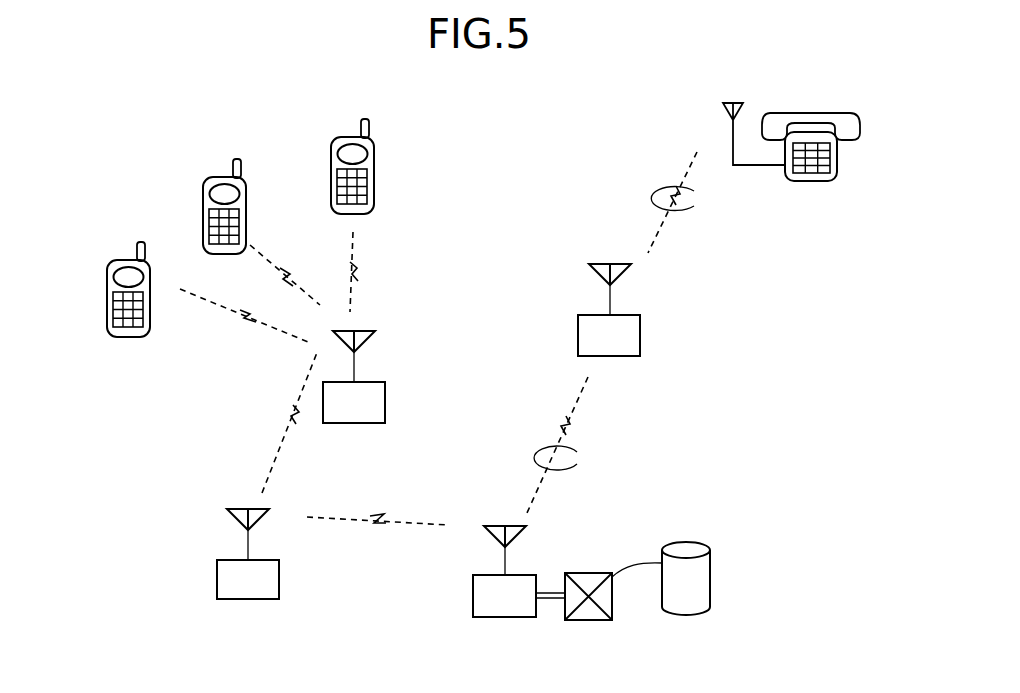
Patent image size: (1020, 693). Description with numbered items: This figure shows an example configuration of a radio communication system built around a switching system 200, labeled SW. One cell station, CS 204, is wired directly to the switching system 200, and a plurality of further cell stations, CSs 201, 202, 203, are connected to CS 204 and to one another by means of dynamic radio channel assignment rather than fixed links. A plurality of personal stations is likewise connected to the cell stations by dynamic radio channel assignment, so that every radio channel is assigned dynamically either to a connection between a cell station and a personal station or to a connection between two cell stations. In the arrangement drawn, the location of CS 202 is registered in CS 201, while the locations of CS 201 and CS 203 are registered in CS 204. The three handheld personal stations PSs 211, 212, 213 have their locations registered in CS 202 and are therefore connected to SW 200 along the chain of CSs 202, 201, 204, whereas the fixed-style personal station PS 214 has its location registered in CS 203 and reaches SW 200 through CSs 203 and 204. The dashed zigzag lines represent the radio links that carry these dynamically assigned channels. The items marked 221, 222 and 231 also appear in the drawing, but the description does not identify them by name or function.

The switching system 200 is at (612, 611).
The CS 201 is at (279, 580).
The CS 202 is at (385, 403).
The CS 203 is at (640, 336).
The CS 204 is at (473, 600).
The PS 211 is at (109, 262).
The PS 212 is at (205, 180).
The PS 213 is at (333, 142).
The PS 214 is at (820, 182).
The radio link interference / obstacle 221 is at (694, 206).
The radio link interference / obstacle 222 is at (577, 464).
The database (DB) 231 is at (710, 575).